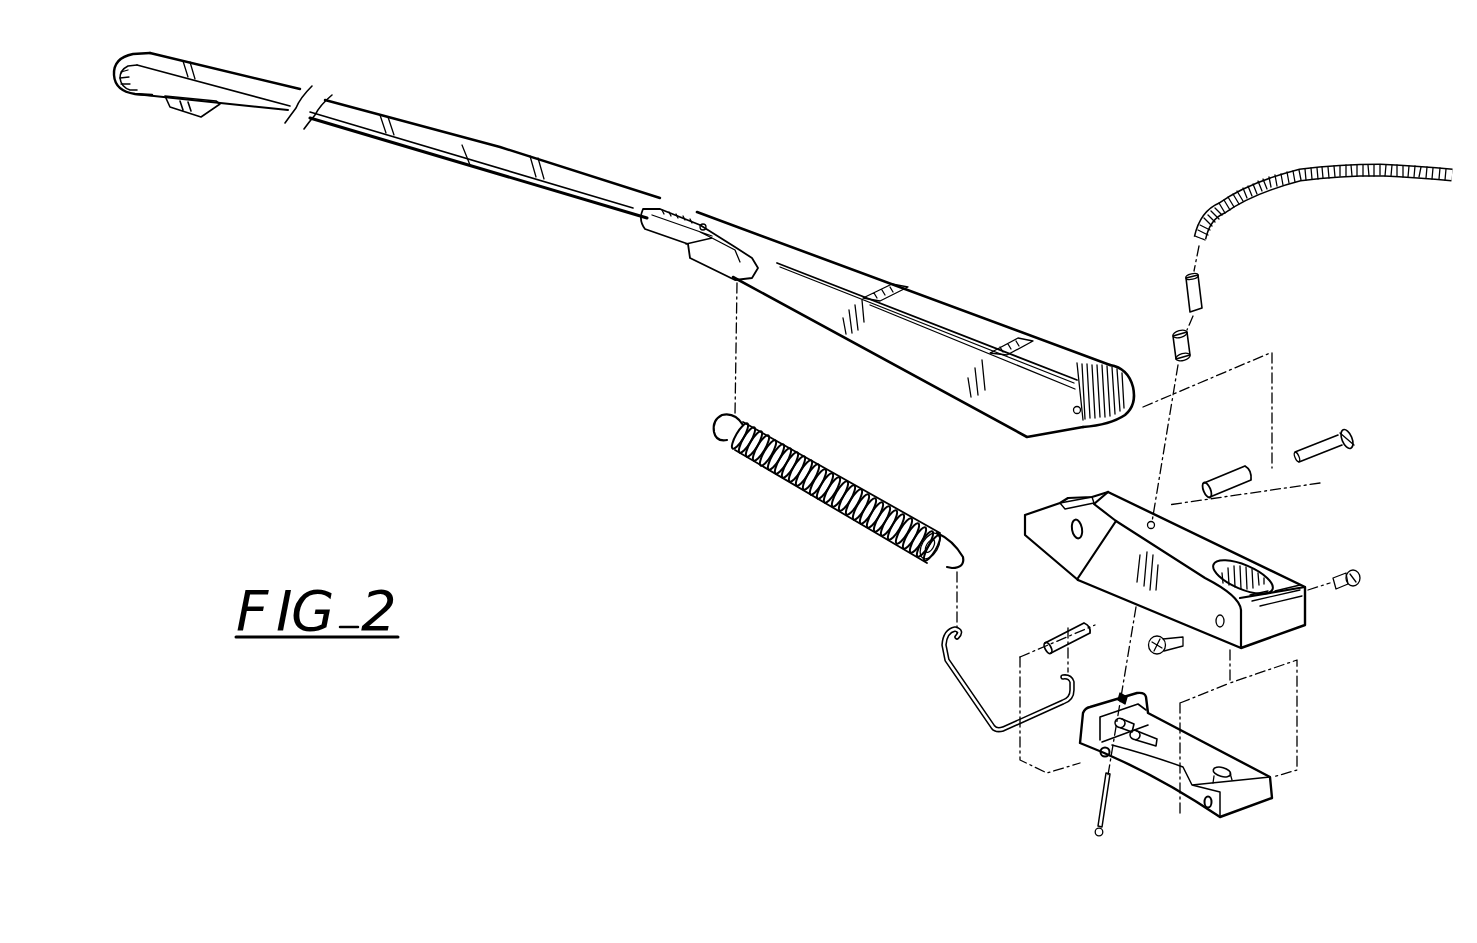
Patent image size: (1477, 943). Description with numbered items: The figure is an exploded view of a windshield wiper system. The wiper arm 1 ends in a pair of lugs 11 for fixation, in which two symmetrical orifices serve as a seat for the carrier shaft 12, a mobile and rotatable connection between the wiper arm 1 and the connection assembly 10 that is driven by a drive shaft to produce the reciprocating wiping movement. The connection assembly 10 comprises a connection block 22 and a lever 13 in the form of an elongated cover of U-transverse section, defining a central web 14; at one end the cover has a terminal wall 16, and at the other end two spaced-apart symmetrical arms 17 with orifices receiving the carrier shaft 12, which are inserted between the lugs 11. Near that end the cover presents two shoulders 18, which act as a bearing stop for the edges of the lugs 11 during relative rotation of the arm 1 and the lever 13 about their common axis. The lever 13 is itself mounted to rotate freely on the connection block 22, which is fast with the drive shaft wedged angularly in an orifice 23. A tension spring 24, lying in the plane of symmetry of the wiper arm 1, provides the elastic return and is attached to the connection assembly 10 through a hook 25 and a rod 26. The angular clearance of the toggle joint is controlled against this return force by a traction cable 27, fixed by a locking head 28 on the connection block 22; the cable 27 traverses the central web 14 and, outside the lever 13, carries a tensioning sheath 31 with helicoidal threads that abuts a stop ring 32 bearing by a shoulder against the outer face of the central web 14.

The wiper arm 1 is at (610, 158).
The connection assembly 10 is at (1302, 803).
The lugs for fixation 11 is at (1078, 413).
The carrier shaft 12 is at (1232, 472).
The lever 13 is at (1272, 552).
The central web 14 is at (1200, 528).
The terminal wall 16 is at (1292, 619).
The arms 17 is at (1035, 524).
The shoulders 18 is at (1090, 514).
The connection block 22 is at (1158, 783).
The orifice 23 is at (1237, 765).
The tension spring 24 is at (800, 500).
The hook 25 is at (960, 687).
The rod 26 is at (1062, 633).
The traction cable 27 is at (1094, 793).
The locking head 28 is at (1094, 826).
The tensioning sheath 31 is at (1330, 168).
The stop ring 32 is at (1193, 343).